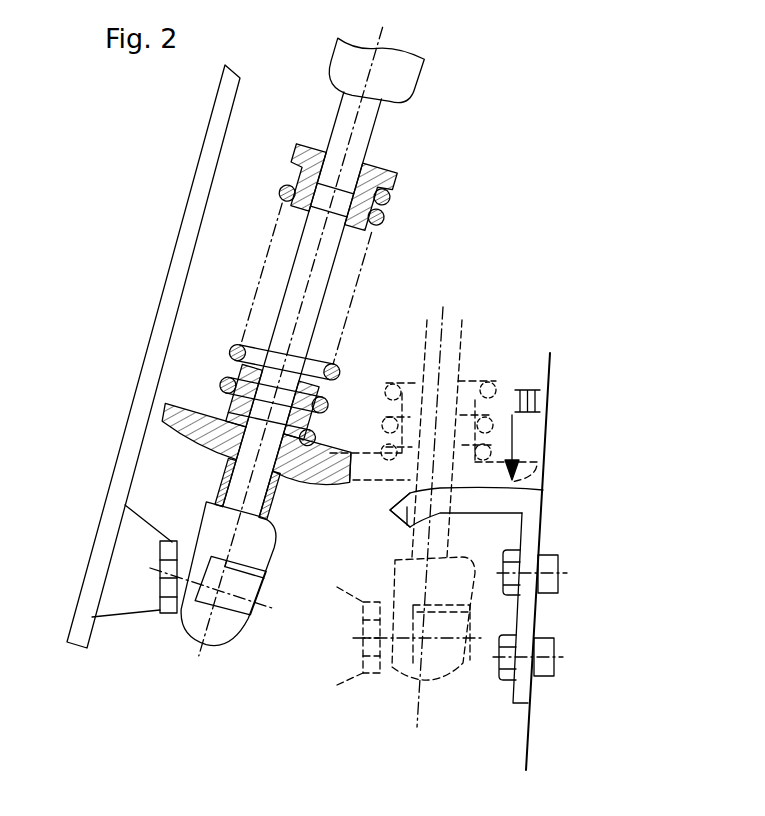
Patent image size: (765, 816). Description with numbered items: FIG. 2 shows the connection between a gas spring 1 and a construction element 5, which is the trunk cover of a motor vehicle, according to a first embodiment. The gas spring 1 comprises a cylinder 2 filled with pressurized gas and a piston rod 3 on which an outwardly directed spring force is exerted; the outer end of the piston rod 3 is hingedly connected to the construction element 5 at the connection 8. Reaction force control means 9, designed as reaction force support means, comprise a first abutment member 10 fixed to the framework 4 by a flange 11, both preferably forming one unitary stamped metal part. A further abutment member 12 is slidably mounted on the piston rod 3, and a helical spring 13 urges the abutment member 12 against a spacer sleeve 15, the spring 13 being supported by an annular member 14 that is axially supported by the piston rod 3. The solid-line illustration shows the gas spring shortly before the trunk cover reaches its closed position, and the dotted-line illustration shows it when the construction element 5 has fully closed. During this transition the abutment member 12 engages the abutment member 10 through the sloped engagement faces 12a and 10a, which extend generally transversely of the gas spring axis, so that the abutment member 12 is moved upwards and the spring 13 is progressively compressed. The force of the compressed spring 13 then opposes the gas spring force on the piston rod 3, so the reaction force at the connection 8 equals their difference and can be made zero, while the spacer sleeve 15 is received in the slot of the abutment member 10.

The gas spring 1 is at (460, 100).
The cylinder 2 is at (393, 97).
The piston rod 3 is at (325, 275).
The framework 4 is at (550, 397).
The construction element 5 is at (182, 255).
The connection 8 is at (225, 625).
The reaction force control means 9 is at (503, 620).
The first abutment member 10 is at (493, 502).
The engagement face 10a is at (395, 500).
The flange 11 is at (532, 547).
The further abutment member 12 is at (183, 423).
The engagement face 12a is at (303, 483).
The helical spring 13 is at (223, 383).
The annular member 14 is at (295, 150).
The spacer sleeve 15 is at (220, 477).